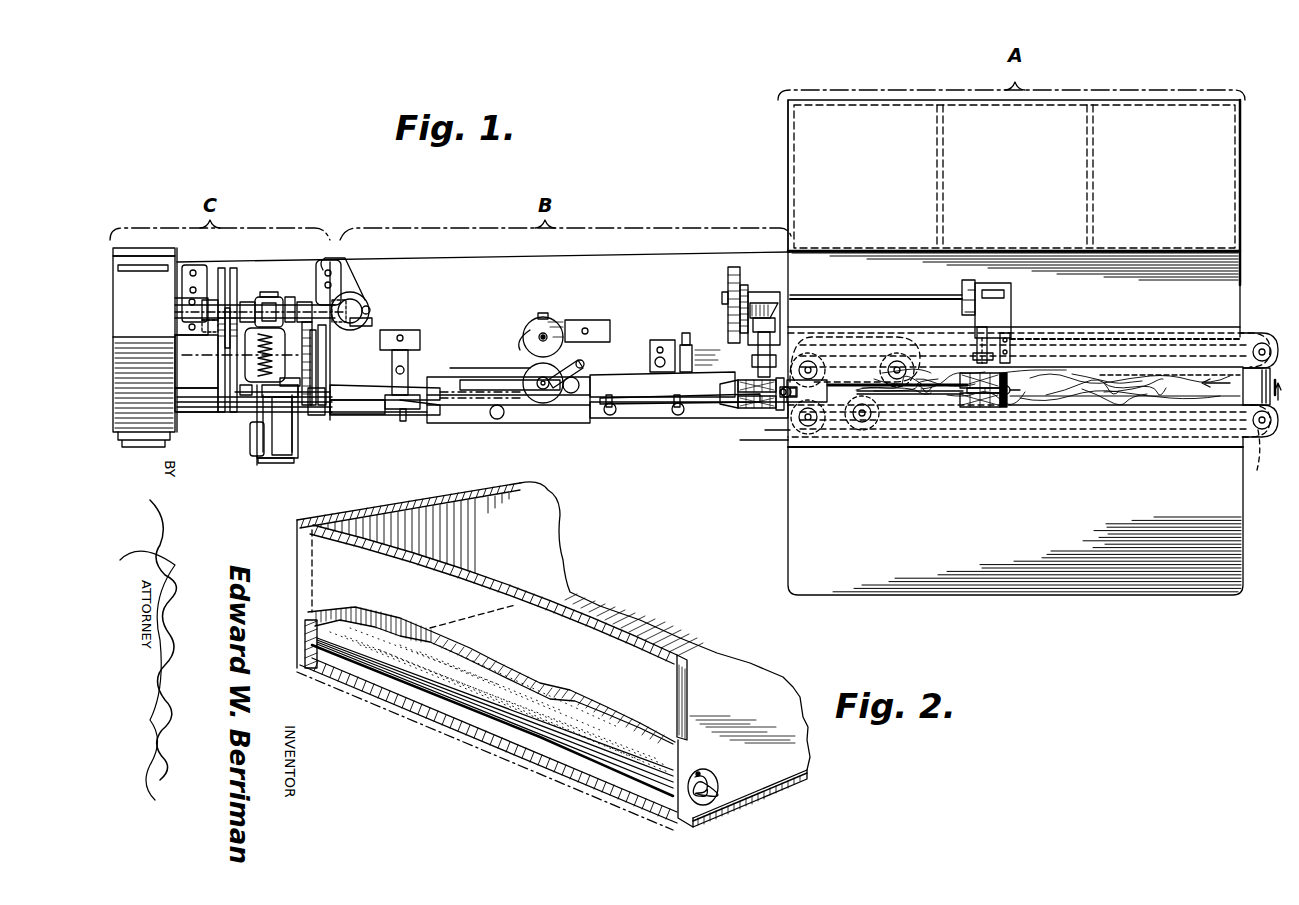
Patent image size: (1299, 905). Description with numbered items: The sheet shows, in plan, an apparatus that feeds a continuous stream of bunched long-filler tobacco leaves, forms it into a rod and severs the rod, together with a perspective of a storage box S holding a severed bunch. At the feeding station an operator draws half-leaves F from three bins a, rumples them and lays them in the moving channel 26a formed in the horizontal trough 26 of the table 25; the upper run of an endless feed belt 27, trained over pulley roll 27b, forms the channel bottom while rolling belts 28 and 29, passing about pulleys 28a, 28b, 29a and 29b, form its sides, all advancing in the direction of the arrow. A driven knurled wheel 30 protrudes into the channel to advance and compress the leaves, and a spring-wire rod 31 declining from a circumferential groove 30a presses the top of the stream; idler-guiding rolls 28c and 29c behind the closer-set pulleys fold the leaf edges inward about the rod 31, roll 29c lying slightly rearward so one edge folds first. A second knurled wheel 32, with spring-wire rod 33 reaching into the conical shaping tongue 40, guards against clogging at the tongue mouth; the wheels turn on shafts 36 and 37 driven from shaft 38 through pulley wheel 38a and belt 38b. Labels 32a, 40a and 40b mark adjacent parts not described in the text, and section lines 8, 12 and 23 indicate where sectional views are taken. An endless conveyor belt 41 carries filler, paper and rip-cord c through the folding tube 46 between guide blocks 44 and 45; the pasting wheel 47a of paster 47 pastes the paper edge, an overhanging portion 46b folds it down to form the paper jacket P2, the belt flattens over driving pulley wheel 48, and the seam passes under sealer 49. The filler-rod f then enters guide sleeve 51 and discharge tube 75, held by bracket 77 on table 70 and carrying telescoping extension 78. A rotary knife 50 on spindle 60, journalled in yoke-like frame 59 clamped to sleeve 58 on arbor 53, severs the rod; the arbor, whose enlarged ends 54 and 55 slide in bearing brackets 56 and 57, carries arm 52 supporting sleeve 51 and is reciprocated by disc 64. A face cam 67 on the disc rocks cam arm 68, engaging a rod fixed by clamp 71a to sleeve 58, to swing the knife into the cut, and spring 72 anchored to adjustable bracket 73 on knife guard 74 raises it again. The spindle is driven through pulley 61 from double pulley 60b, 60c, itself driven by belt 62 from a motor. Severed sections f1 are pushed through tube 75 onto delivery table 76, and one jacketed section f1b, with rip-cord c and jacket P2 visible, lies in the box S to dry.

In FIG. 1, the roller / section line 8 is at (713, 430).
In FIG. 1, the section line 12 is at (371, 434).
In FIG. 1, the section line 23 is at (380, 325).
In FIG. 1, the table 25 is at (1232, 312).
In FIG. 1, the horizontal trough 26 is at (1195, 331).
In FIG. 1, the conveying channel 26a is at (1105, 372).
In FIG. 1, the endless feed belt 27 is at (852, 380).
In FIG. 1, the pulley roll 27b is at (1258, 392).
In FIG. 1, the rolling belt 28 is at (1225, 430).
In FIG. 1, the pulley 28a is at (790, 438).
In FIG. 1, the pulley 28b is at (1264, 460).
In FIG. 1, the idler-guiding roll 28c is at (855, 440).
In FIG. 1, the rolling belt 29 is at (1100, 340).
In FIG. 1, the pulley 29a is at (820, 340).
In FIG. 1, the pulley 29b is at (1262, 352).
In FIG. 1, the idler-guiding roll 29c is at (888, 345).
In FIG. 1, the knurled wheel 30 is at (1000, 412).
In FIG. 1, the circumferential groove 30a is at (968, 412).
In FIG. 1, the spring-wire rod 31 is at (975, 352).
In FIG. 1, the knurled wheel 32 is at (757, 410).
In FIG. 1, the roller tip 32a is at (745, 412).
In FIG. 1, the spring-wire rod 33 is at (780, 410).
In FIG. 1, the shaft 36 is at (975, 330).
In FIG. 1, the shaft 37 is at (790, 332).
In FIG. 1, the shaft 38 is at (849, 296).
In FIG. 1, the pulley wheel 38a is at (749, 280).
In FIG. 1, the belt 38b is at (735, 267).
In FIG. 1, the shaping tongue 40 is at (698, 414).
In FIG. 1, the slide bar 40a is at (645, 418).
In FIG. 1, the beam 40b is at (636, 368).
In FIG. 1, the conveyor belt 41 is at (443, 388).
In FIG. 1, the guide block 44 is at (535, 418).
In FIG. 1, the guide block 45 is at (482, 388).
In FIG. 1, the folding tube 46 is at (578, 368).
In FIG. 1, the overhanging portion 46b is at (487, 418).
In FIG. 1, the paster device 47 is at (558, 325).
In FIG. 1, the pasting wheel 47a is at (552, 334).
In FIG. 1, the driving pulley wheel 48 is at (350, 418).
In FIG. 1, the sealer 49 is at (390, 375).
In FIG. 1, the rotary circular knife 50 is at (295, 440).
In FIG. 1, the guide sleeve 51 is at (322, 415).
In FIG. 1, the arm 52 is at (306, 302).
In FIG. 1, the arbor 53 is at (182, 318).
In FIG. 1, the enlarged end portion 54 is at (356, 295).
In FIG. 1, the enlarged end portion 55 is at (212, 330).
In FIG. 1, the bearing bracket 56 is at (355, 292).
In FIG. 1, the bearing bracket 57 is at (182, 306).
In FIG. 1, the sleeve 58 is at (250, 302).
In FIG. 1, the supporting frame 59 is at (290, 297).
In FIG. 1, the spindle 60 is at (283, 408).
In FIG. 1, the double pulley 60b is at (238, 293).
In FIG. 1, the pulley 60c is at (218, 290).
In FIG. 1, the pulley 61 is at (232, 418).
In FIG. 1, the belt 62 is at (222, 268).
In FIG. 1, the disc 64 is at (372, 320).
In FIG. 1, the face cam 67 is at (372, 306).
In FIG. 1, the cam arm 68 is at (345, 345).
In FIG. 1, the table 70 is at (478, 270).
In FIG. 1, the clamp 71a is at (268, 297).
In FIG. 1, the spring 72 is at (245, 372).
In FIG. 1, the adjustable bracket 73 is at (252, 445).
In FIG. 1, the knife guard 74 is at (272, 464).
In FIG. 1, the discharge tube 75 is at (205, 415).
In FIG. 1, the delivery table 76 is at (150, 285).
In FIG. 1, the bracket 77 is at (190, 440).
In FIG. 1, the telescoping tubular extension 78 is at (277, 421).
In FIG. 1, the bins a is at (878, 175).
In FIG. 1, the filler leaves F is at (1145, 395).
In FIG. 2, the storage box S is at (545, 545).
In FIG. 2, the paper jacket P2 is at (548, 740).
In FIG. 2, the rip-cord c is at (706, 770).
In FIG. 1, the filler-rod f is at (340, 420).
In FIG. 1, the severed filler-rod section f1 is at (160, 410).
In FIG. 2, the filler-rod section f1b is at (738, 799).